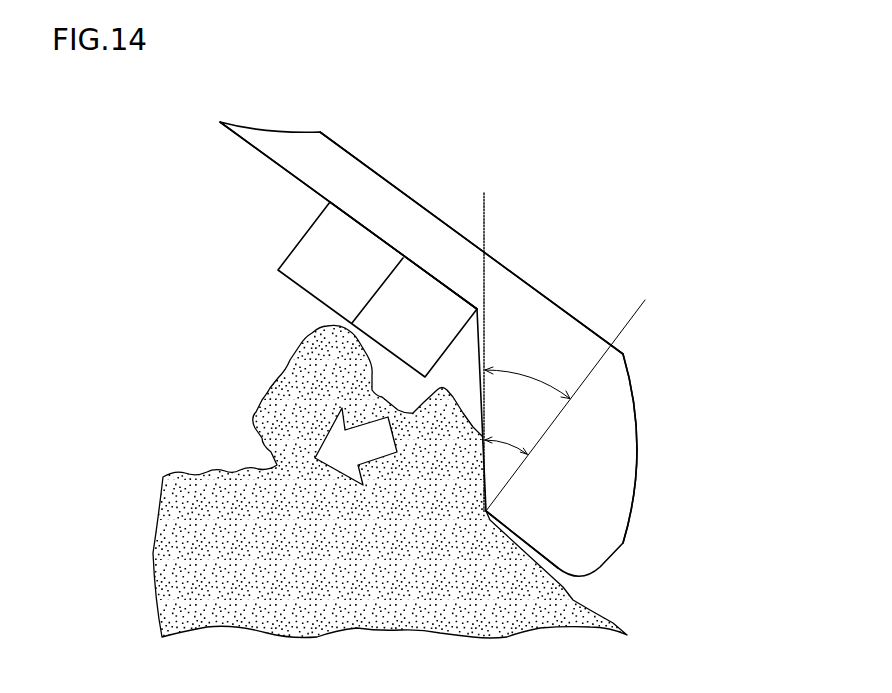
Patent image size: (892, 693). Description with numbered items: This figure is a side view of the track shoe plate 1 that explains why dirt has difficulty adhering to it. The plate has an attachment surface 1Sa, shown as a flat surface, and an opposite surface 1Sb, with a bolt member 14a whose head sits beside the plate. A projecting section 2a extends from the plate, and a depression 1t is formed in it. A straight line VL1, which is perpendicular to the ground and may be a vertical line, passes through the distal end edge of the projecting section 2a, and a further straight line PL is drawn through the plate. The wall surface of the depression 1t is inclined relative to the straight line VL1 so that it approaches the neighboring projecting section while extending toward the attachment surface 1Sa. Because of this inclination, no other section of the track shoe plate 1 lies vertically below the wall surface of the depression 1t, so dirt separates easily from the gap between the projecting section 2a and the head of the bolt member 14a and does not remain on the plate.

The track shoe plate 1 is at (556, 333).
The attachment surface 1Sa is at (365, 165).
The second side surface of blade 1Sb is at (280, 166).
The depression 1t is at (487, 485).
The projecting section 2a is at (593, 445).
The bolt member 14a is at (333, 247).
The straight line VL1 is at (483, 342).
The reference plane line PL is at (570, 393).